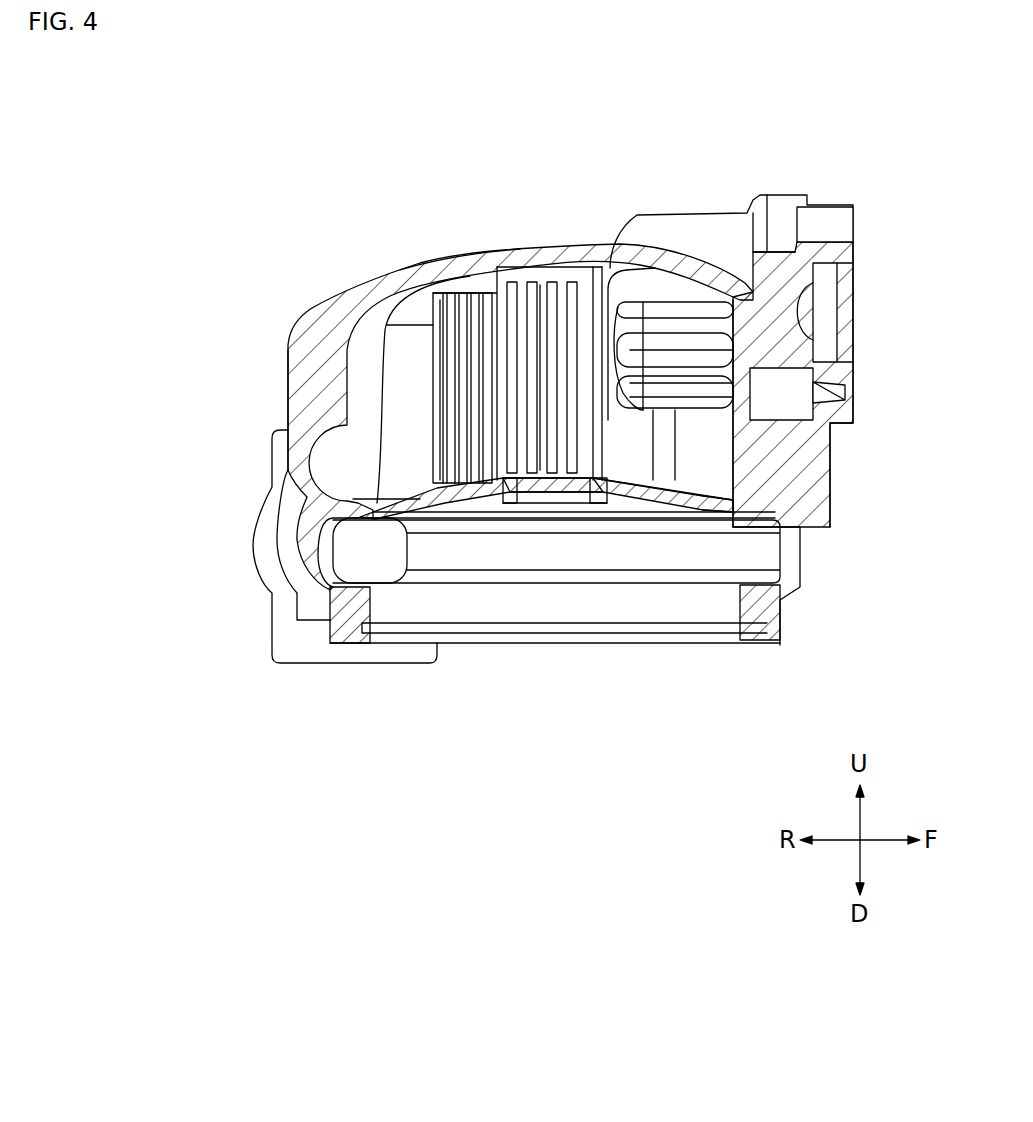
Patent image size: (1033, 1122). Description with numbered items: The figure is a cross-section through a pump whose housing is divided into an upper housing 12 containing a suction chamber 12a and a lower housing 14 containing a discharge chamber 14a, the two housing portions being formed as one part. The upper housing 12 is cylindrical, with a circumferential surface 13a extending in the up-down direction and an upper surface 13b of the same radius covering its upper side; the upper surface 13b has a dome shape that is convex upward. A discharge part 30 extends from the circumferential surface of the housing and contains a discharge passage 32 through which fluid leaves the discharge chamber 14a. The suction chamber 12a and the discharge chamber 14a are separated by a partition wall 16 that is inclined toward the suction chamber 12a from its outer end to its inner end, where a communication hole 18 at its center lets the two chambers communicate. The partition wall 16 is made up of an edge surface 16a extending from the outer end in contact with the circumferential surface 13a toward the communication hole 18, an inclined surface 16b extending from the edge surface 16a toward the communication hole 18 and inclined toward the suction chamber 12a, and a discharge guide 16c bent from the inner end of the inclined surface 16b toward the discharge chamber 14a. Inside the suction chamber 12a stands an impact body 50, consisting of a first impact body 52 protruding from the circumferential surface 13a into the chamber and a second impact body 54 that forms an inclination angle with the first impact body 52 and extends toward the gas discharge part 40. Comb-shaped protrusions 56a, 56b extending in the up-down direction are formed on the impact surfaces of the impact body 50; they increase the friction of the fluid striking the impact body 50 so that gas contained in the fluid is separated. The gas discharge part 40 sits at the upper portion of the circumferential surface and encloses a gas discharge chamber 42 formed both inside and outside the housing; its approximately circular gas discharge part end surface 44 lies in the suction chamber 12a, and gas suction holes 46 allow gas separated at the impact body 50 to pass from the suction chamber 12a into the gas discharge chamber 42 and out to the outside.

The upper housing 12 is at (320, 330).
The suction chamber 12a is at (416, 410).
The circumferential surface 13a is at (295, 385).
The upper surface 13b is at (425, 278).
The lower housing 14 is at (350, 630).
The discharge chamber 14a is at (509, 547).
The partition wall 16 is at (565, 649).
The edge surface 16a is at (705, 505).
The inclined surface 16b is at (660, 498).
The discharge guide 16c is at (603, 496).
The communication hole 18 is at (584, 493).
The discharge part 30 is at (265, 545).
The discharge passage 32 is at (385, 547).
The gas discharge part 40 is at (741, 240).
The gas discharge chamber 42 is at (825, 313).
The gas discharge part end surface 44 is at (630, 288).
The gas suction holes 46 is at (707, 373).
The impact body 50 is at (530, 307).
The first impact body 52 is at (472, 290).
The second impact body 54 is at (552, 278).
The protrusion 56a is at (453, 440).
The protrusion 56b is at (553, 422).